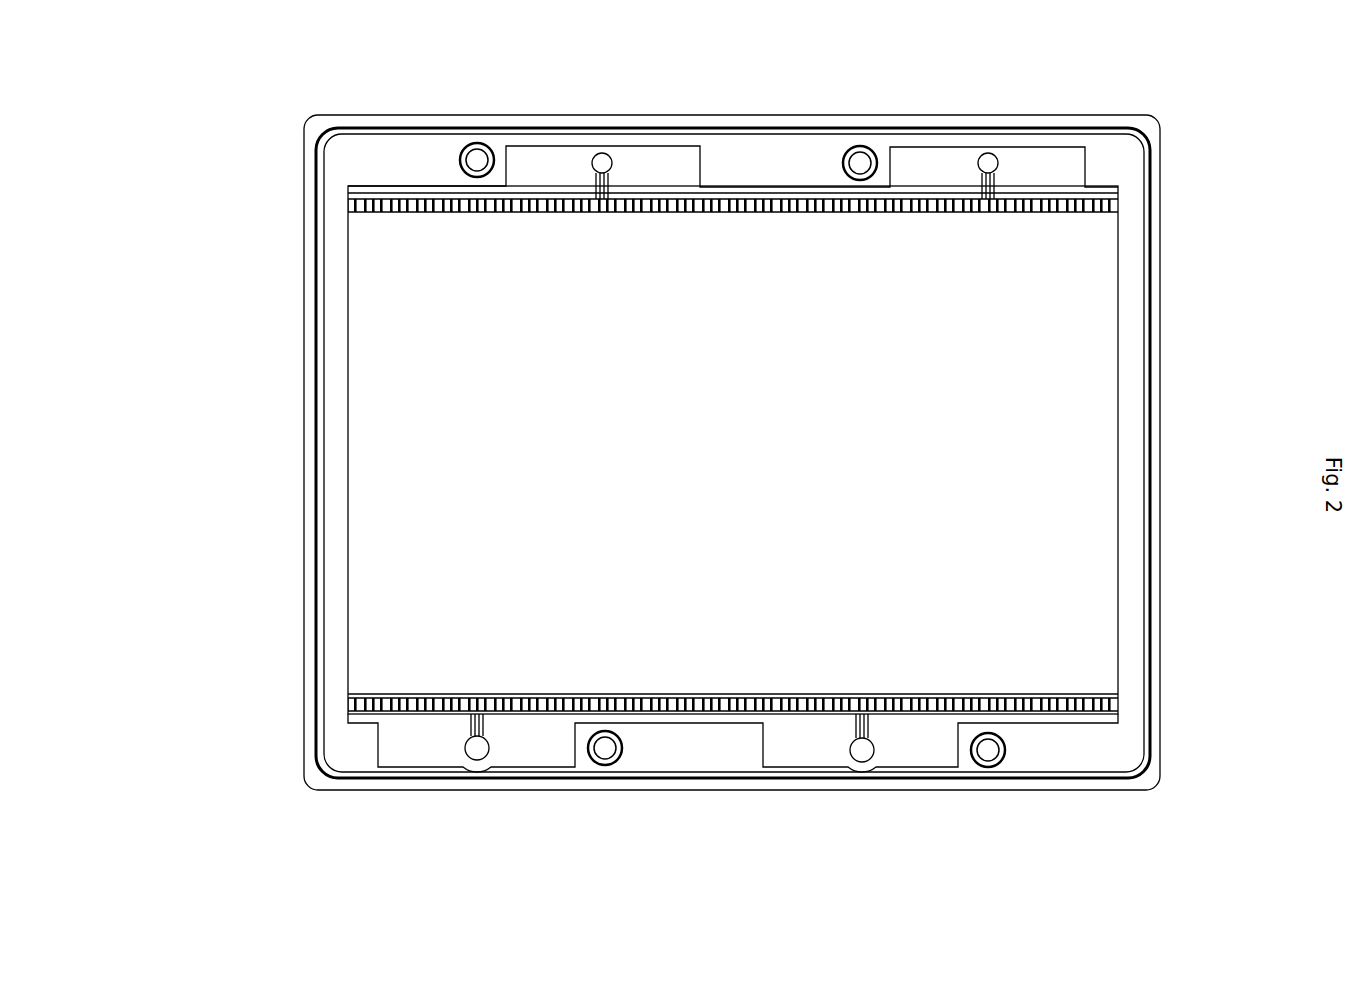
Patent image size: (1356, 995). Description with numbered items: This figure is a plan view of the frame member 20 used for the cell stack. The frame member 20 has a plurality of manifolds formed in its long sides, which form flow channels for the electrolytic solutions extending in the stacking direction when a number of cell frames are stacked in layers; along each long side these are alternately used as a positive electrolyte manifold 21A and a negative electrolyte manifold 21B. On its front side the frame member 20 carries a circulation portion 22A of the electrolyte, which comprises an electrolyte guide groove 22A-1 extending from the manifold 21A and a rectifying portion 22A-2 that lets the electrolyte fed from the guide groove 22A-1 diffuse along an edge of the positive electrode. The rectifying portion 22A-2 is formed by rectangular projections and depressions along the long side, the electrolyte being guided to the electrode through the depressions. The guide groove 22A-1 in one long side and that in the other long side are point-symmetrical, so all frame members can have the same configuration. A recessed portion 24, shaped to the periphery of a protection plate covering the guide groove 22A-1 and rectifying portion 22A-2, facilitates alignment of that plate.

The frame member 20 is at (1169, 483).
The positive electrolyte manifold 21A is at (990, 153).
The negative electrolyte manifold 21B is at (868, 146).
The circulation portion 22A is at (110, 684).
The electrolyte guide groove 22A-1 is at (460, 720).
The rectifying portion 22A-2 is at (348, 694).
The recessed portion 24 is at (806, 767).